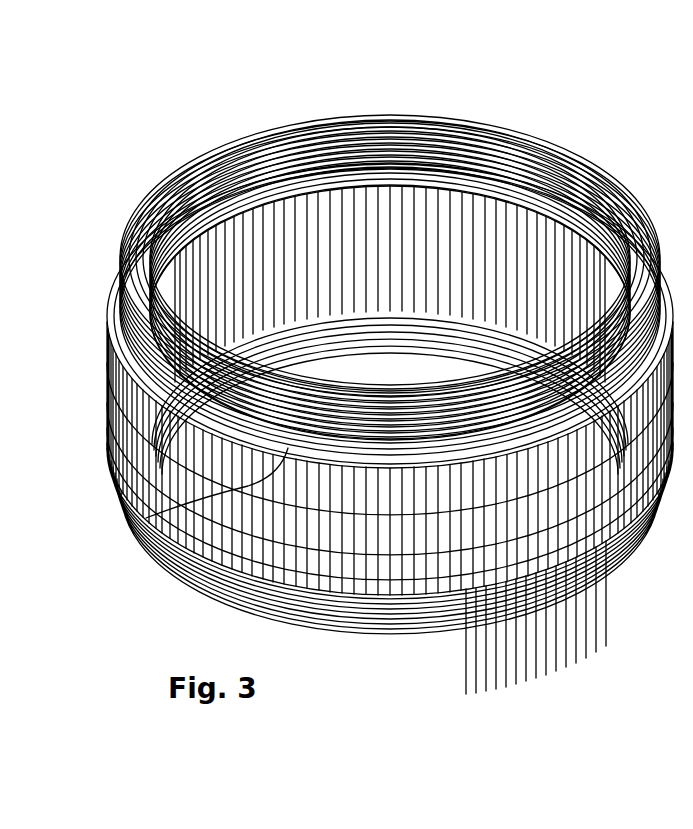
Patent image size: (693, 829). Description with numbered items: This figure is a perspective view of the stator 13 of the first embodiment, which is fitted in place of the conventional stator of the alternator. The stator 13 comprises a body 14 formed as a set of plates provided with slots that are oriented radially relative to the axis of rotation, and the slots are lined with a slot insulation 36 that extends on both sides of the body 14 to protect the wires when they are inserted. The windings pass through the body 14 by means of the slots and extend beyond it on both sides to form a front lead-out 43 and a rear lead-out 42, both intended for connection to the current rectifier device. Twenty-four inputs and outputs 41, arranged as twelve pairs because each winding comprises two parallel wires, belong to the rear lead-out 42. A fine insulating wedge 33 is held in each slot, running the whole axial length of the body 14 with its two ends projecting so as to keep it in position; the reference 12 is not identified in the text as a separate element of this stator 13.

The stator 12 is at (252, 108).
The stator 13 is at (204, 108).
The body 14 is at (103, 436).
The wedge 33 is at (383, 188).
The slot insulation 36 is at (138, 510).
The inputs and outputs 41 is at (455, 660).
The rear lead-out 42 is at (326, 638).
The front lead-out 43 is at (505, 125).